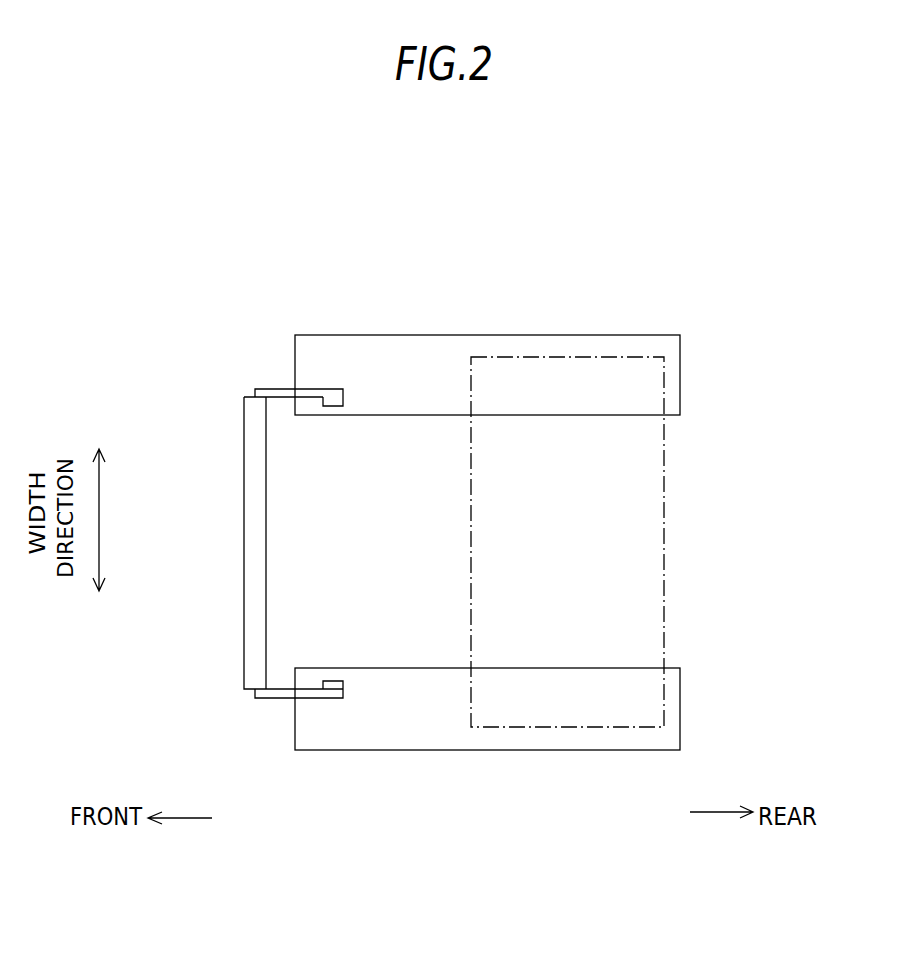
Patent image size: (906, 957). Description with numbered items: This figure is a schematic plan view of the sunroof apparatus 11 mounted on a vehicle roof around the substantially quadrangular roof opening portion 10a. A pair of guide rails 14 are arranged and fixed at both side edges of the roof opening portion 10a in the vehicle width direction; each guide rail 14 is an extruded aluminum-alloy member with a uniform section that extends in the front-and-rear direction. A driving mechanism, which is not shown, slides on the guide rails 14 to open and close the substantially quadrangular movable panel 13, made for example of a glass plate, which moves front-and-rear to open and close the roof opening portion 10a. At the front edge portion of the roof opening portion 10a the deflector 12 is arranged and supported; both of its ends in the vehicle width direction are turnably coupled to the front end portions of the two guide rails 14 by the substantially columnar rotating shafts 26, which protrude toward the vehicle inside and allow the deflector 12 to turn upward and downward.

The roof opening portion 10a is at (398, 543).
The sunroof apparatus 11 is at (457, 527).
The deflector 12 is at (255, 560).
The movable panel 13 is at (664, 546).
The guide rails 14 is at (377, 335).
The rotating shafts 26 is at (327, 407).